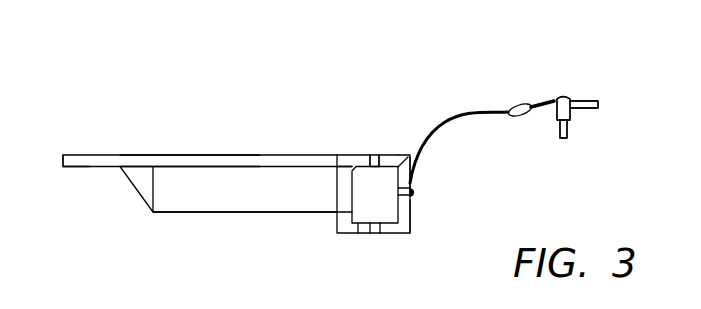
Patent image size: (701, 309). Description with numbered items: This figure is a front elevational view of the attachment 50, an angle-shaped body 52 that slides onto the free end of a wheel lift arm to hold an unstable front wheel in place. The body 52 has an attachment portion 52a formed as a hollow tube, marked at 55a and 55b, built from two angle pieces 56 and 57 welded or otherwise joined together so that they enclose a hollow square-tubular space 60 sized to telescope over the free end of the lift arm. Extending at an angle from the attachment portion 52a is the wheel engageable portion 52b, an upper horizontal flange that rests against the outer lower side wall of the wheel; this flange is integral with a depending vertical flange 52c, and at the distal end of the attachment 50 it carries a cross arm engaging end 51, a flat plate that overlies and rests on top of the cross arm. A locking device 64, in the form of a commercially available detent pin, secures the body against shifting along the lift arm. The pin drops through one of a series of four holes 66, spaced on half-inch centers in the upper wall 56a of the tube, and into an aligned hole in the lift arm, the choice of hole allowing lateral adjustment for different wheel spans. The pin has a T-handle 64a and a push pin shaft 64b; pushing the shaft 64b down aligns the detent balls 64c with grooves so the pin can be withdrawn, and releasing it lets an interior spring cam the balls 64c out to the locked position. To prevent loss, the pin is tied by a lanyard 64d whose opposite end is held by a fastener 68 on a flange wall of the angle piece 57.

The attachment 50 is at (292, 152).
The cross arm engaging end 51 is at (90, 168).
The angle-shaped body 52 is at (337, 140).
The attachment portion 52a is at (428, 173).
The wheel engageable portion 52b is at (190, 155).
The depending vertical flange 52c is at (222, 202).
The upper pin 55a is at (353, 157).
The lower pin 55b is at (358, 233).
The angle piece 56 is at (372, 157).
The upper wall 56a is at (347, 165).
The angle piece 57 is at (407, 213).
The hollow square-tubular space 60 is at (365, 212).
The locking device 64 is at (535, 93).
The T-handle 64a is at (573, 112).
The push pin shaft 64b is at (568, 128).
The detent balls 64c is at (567, 137).
The lanyard 64d is at (467, 117).
The holes 66 is at (382, 157).
The fastener 68 is at (421, 192).